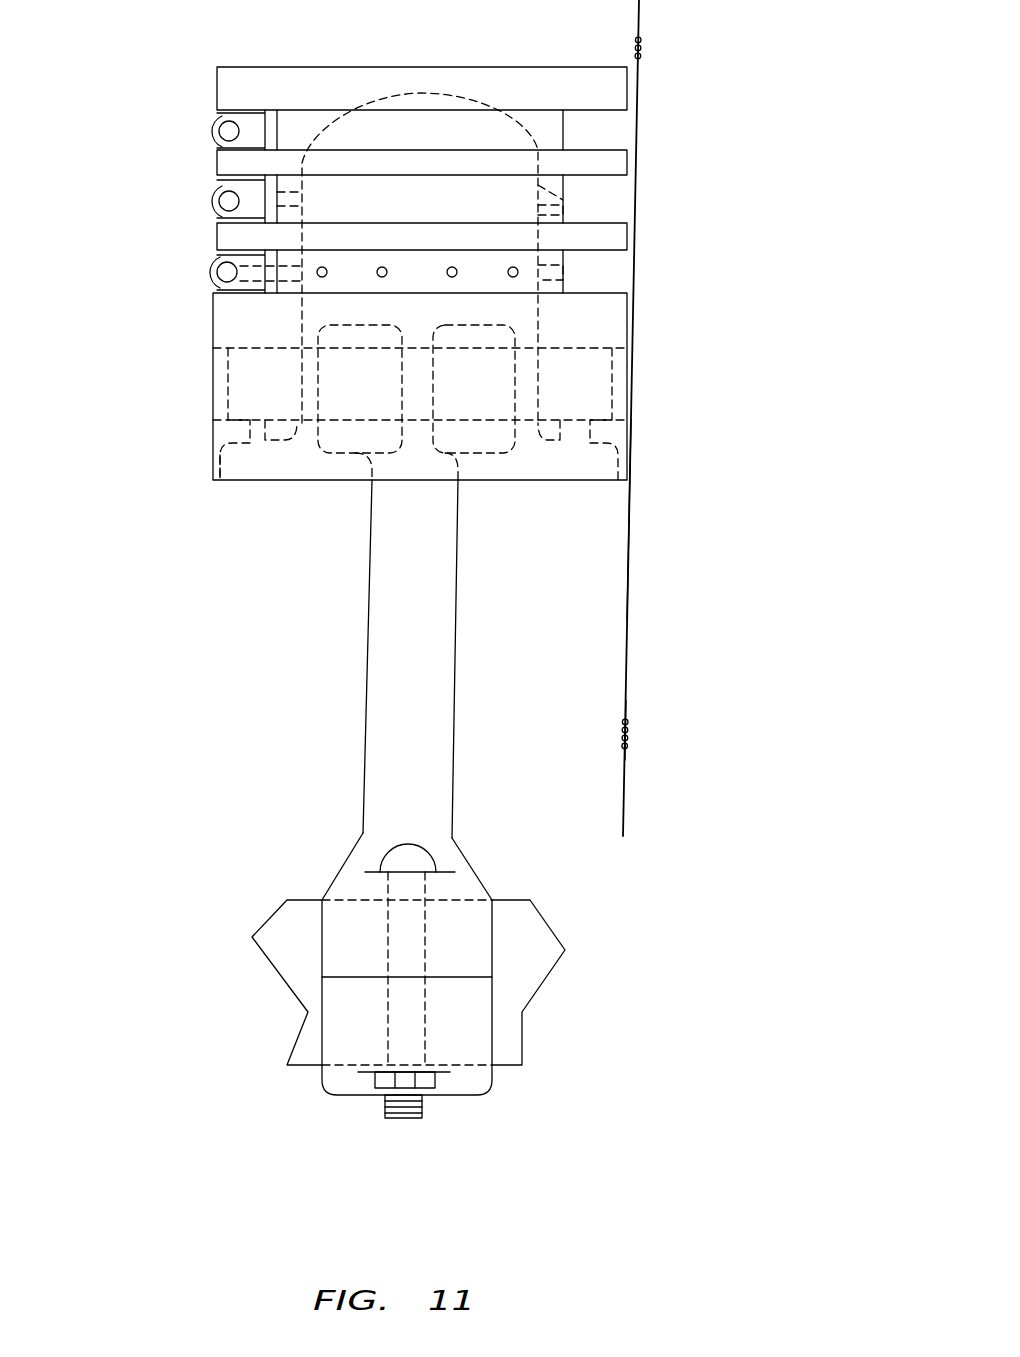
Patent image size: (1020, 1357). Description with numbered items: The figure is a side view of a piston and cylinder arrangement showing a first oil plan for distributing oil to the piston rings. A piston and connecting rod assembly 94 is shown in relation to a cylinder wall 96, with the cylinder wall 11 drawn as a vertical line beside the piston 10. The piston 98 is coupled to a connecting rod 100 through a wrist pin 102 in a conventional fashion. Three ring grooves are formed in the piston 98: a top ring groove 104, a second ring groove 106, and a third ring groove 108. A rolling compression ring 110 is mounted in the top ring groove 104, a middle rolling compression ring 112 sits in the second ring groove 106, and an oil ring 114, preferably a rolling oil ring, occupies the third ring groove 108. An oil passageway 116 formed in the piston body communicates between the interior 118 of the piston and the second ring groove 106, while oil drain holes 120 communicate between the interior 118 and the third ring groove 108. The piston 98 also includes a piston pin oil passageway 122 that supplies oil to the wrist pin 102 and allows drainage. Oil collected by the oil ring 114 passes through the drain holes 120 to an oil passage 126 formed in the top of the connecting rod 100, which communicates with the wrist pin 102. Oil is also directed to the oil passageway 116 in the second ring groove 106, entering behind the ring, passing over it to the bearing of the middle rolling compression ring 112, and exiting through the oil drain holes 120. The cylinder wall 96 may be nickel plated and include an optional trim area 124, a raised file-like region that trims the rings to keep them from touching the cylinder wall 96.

The piston 10 is at (638, 335).
The cylinder wall 11 is at (642, 44).
The piston and connecting rod assembly 94 is at (193, 622).
The cylinder wall 96 is at (636, 600).
The piston 98 is at (210, 362).
The connecting rod 100 is at (363, 722).
The wrist pin 102 is at (473, 393).
The top ring groove 104 is at (600, 128).
The second ring groove 106 is at (638, 200).
The third ring groove 108 is at (618, 272).
The rolling compression ring 110 is at (217, 143).
The middle rolling compression ring 112 is at (214, 208).
The oil ring 114 is at (207, 292).
The oil passageway 116 is at (572, 200).
The interior of the piston 118 is at (400, 187).
The oil drain holes 120 is at (518, 270).
The piston pin oil passageway 122 is at (258, 432).
The trim area 124 is at (602, 747).
The oil passage 126 is at (418, 330).